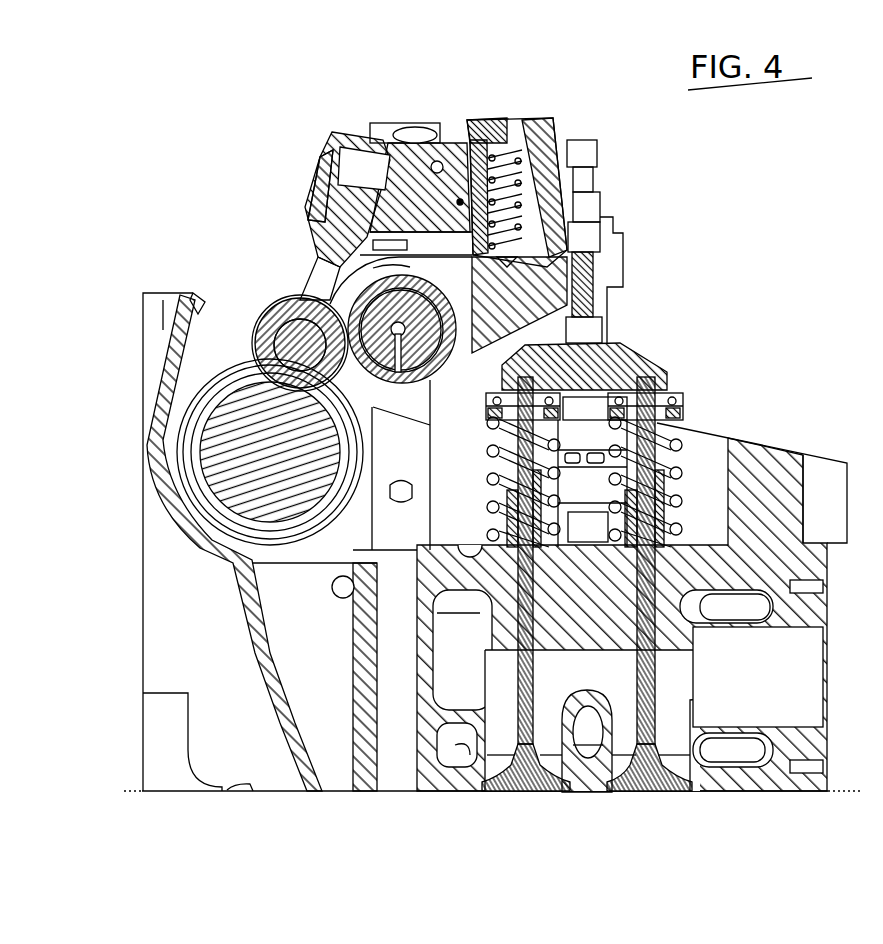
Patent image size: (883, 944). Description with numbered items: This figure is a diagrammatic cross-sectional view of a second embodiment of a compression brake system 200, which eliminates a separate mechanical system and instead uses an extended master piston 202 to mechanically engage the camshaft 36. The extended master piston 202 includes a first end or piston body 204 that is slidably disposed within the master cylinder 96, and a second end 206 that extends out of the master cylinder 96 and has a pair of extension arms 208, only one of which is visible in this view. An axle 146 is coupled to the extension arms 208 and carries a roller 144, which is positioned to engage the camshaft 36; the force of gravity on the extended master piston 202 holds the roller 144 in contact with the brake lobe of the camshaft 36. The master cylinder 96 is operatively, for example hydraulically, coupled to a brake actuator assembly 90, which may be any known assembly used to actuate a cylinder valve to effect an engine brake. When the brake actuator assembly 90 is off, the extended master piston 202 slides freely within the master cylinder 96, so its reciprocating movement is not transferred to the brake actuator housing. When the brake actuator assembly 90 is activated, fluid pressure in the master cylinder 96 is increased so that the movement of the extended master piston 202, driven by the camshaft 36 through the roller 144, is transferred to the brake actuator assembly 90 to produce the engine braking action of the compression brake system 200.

The camshaft 36 is at (287, 524).
The brake actuator assembly 90 is at (447, 127).
The master cylinder 96 is at (352, 157).
The roller 144 is at (263, 352).
The axle 146 is at (293, 342).
The compression brake system 200 is at (203, 116).
The extended master piston 202 is at (328, 238).
The piston body 204 is at (335, 193).
The second end 206 is at (300, 283).
The extension arms 208 is at (273, 298).